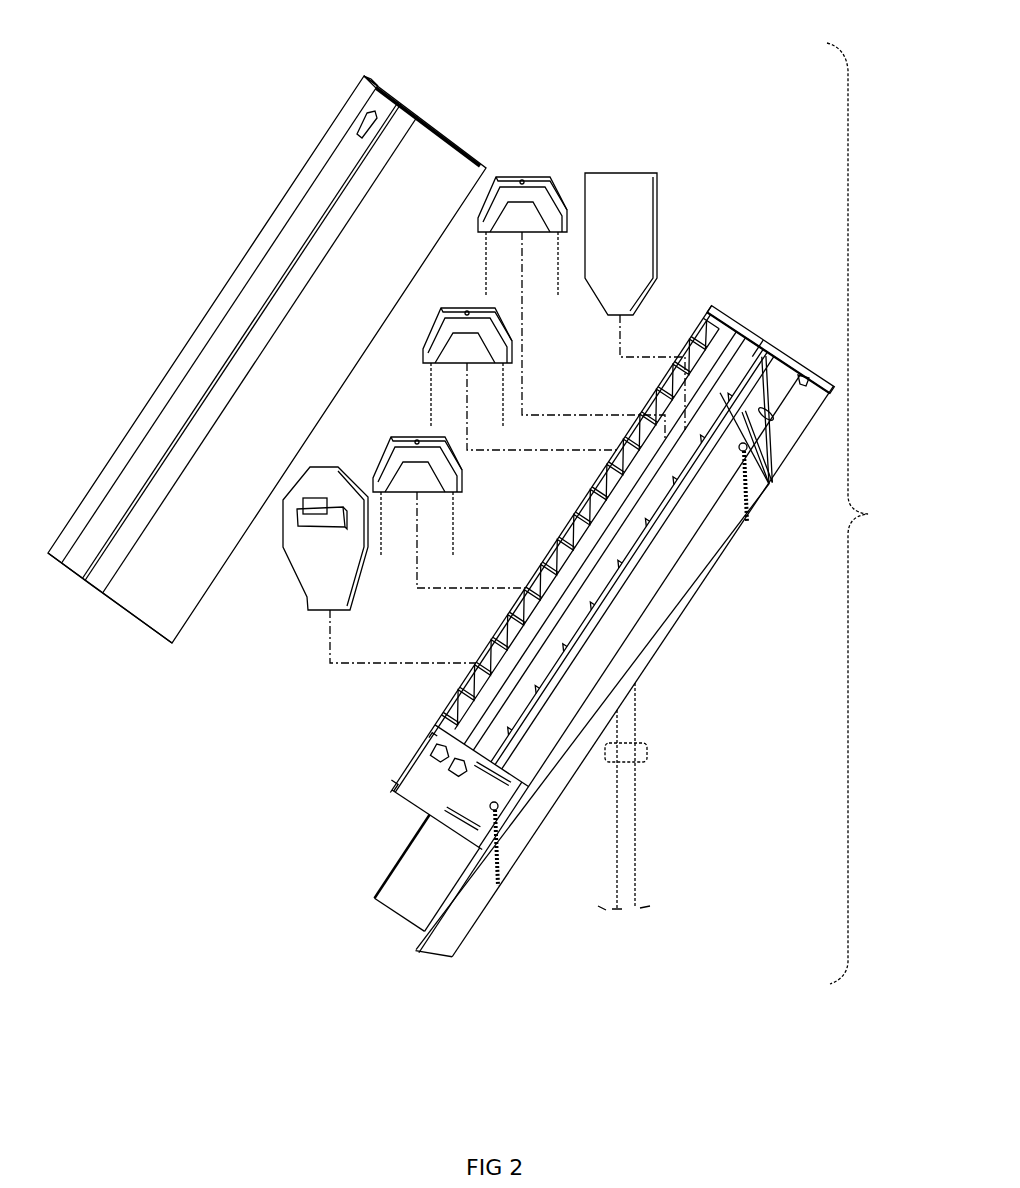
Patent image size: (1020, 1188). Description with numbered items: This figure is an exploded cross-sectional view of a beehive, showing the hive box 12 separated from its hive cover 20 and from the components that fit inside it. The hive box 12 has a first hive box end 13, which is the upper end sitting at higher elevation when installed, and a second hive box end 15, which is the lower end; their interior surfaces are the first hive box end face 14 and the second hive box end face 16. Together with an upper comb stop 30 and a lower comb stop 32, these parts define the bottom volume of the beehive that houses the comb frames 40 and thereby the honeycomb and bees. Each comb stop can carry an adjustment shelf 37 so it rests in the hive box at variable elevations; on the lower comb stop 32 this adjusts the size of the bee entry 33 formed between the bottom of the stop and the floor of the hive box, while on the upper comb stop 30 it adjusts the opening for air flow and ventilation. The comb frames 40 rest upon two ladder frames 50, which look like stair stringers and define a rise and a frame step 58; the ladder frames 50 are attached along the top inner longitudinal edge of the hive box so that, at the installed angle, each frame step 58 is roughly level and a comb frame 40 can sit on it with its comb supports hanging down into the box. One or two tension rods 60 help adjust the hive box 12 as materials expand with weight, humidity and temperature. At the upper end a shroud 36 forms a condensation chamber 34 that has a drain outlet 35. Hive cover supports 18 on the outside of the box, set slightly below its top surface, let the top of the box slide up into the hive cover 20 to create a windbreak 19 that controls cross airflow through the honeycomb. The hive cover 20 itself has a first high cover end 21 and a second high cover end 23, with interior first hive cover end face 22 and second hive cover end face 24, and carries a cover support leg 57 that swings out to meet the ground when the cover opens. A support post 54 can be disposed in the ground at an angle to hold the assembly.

The hive box 12 is at (388, 920).
The first hive box end 13 is at (770, 350).
The first hive box end face 14 is at (629, 556).
The second hive box end 15 is at (500, 814).
The second hive box end face 16 is at (449, 760).
The hive cover support 18 is at (800, 378).
The windbreak 19 is at (579, 523).
The hive cover 20 is at (283, 193).
The first high cover end 21 is at (371, 75).
The first hive cover end face 22 is at (430, 132).
The second high cover end 23 is at (85, 592).
The second hive cover end face 24 is at (120, 600).
The upper comb stop 30 is at (627, 200).
The lower comb stop 32 is at (297, 578).
The bee entry 33 is at (426, 873).
The condensation chamber 34 is at (757, 348).
The drain outlet 35 is at (757, 447).
The shroud 36 is at (761, 415).
The adjustment shelf 37 is at (315, 527).
The comb frame 40 is at (524, 176).
The ladder frame 50 is at (600, 538).
The support post 54 is at (640, 797).
The cover support leg 57 is at (288, 252).
The frame step 58 is at (618, 564).
The tension rod 60 is at (749, 512).